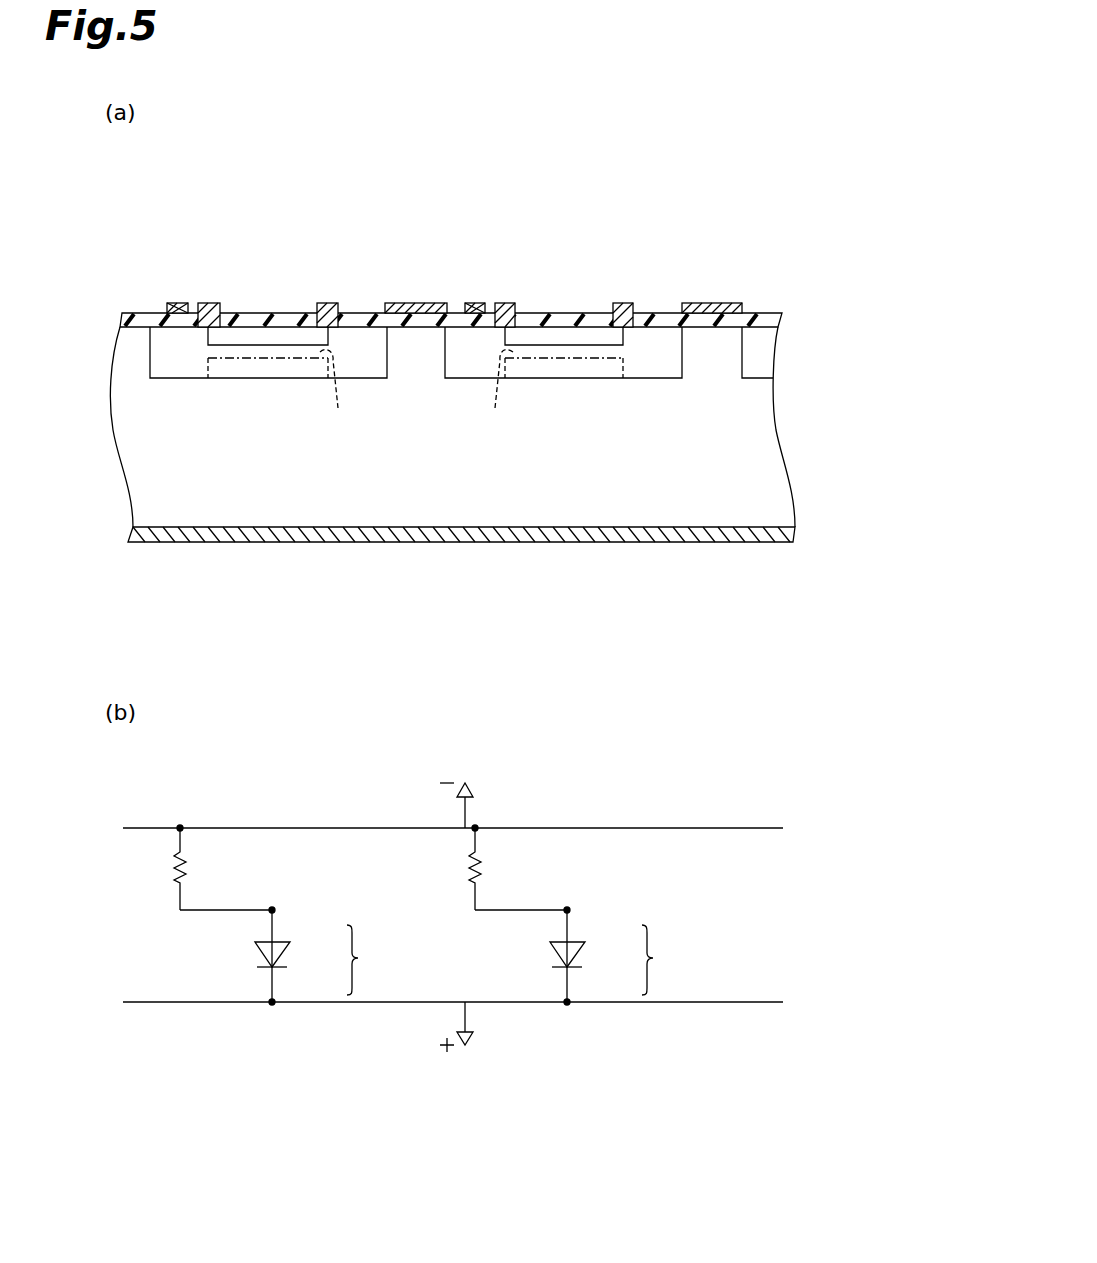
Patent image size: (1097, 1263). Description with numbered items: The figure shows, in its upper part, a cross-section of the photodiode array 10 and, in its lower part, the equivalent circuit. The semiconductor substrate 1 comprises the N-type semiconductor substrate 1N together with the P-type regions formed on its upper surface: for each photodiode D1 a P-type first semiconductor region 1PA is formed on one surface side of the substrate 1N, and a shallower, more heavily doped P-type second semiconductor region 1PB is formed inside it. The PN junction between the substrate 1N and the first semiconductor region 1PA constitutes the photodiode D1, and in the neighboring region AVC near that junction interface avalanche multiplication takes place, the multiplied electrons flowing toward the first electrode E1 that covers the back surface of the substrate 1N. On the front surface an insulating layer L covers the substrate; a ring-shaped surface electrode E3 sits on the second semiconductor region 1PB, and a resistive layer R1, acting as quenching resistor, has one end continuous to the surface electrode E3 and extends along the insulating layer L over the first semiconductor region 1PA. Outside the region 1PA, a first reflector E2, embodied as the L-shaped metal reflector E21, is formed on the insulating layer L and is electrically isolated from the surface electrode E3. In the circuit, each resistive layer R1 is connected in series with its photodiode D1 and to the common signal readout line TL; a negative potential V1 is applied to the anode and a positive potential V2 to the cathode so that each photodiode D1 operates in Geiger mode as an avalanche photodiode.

The photodiode array 10 is at (790, 198).
The semiconductor substrate 1 is at (846, 327).
The N-type semiconductor substrate 1N is at (775, 490).
The first semiconductor region 1PA is at (178, 368).
The second semiconductor region 1PB is at (247, 335).
The photodiode D1 is at (275, 280).
The resistive layer R1 is at (185, 303).
The surface electrode E3 is at (328, 303).
The reflector E21 is at (563, 269).
The first reflector E2 is at (417, 303).
The insulating layer L is at (777, 322).
The first electrode E1 is at (772, 542).
The neighboring region AVC is at (416, 396).
The (−) potential V1 is at (472, 790).
The (+) potential V2 is at (470, 1040).
The common signal readout line TL is at (770, 830).